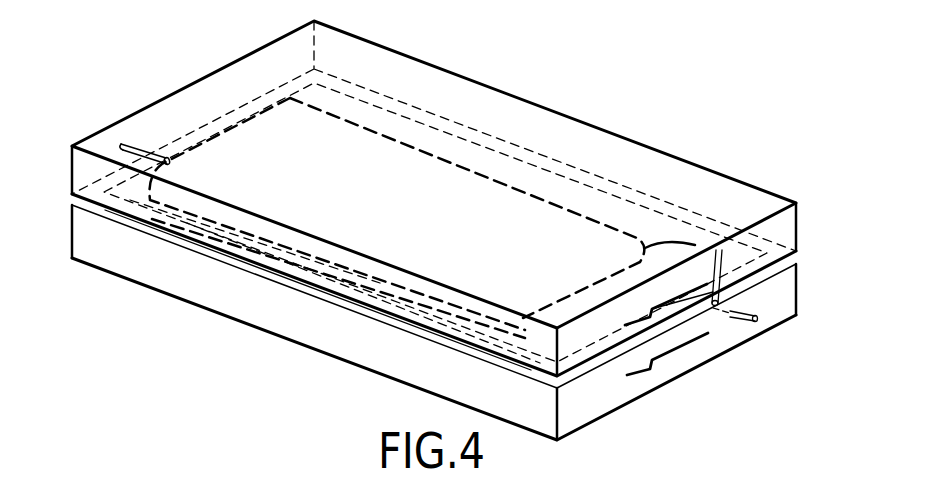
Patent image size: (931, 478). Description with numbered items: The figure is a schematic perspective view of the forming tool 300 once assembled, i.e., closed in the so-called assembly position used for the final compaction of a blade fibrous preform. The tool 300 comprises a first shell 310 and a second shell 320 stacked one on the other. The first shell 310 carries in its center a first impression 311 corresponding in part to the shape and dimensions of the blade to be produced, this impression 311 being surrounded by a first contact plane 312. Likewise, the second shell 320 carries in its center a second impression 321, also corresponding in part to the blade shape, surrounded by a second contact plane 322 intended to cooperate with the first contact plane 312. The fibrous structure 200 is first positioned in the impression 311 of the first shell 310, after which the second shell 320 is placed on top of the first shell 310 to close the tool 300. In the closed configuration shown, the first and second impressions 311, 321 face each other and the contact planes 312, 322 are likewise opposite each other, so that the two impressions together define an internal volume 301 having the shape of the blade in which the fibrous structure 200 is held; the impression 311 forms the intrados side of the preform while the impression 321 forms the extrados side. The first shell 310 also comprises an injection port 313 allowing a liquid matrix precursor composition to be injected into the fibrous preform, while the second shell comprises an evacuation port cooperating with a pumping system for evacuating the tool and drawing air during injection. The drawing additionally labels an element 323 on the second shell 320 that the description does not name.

The fibrous structure 200 is at (466, 172).
The forming tool 300 is at (854, 166).
The internal volume 301 is at (158, 247).
The first shell 310 is at (803, 268).
The first impression 311 is at (218, 252).
The first contact plane 312 is at (92, 200).
The injection port 313 is at (738, 322).
The second shell 320 is at (645, 160).
The second impression 321 is at (126, 166).
The second contact plane 322 is at (115, 215).
The connector pin 323 is at (147, 145).